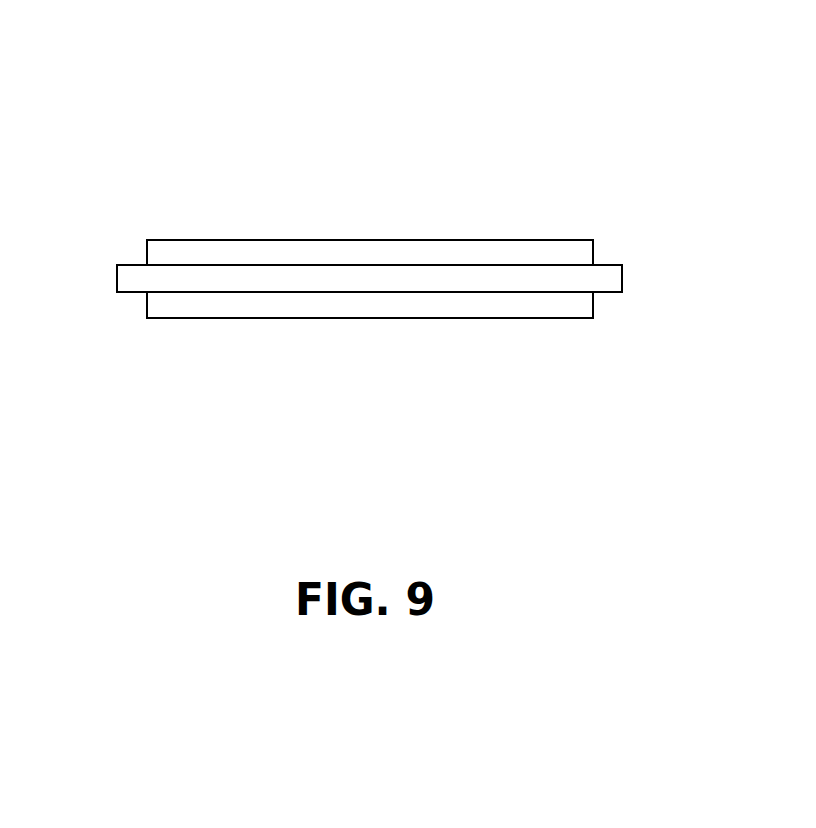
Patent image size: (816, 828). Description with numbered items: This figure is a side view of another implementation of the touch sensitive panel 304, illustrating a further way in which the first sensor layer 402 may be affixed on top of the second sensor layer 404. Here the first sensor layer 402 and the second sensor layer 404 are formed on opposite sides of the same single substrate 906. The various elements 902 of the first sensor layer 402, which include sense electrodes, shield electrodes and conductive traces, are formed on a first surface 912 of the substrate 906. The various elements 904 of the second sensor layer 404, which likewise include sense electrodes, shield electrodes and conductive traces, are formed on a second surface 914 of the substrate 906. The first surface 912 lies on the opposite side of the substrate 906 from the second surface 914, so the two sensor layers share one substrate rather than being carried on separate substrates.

The touch sensitive panel 304 is at (661, 80).
The second sensor layer 404 is at (100, 275).
The first sensor layer 402 is at (100, 282).
The elements of first sensor layer 902 is at (593, 251).
The substrate 906 is at (622, 278).
The elements of second sensor layer 904 is at (593, 303).
The first surface 912 is at (142, 263).
The second surface 914 is at (142, 291).